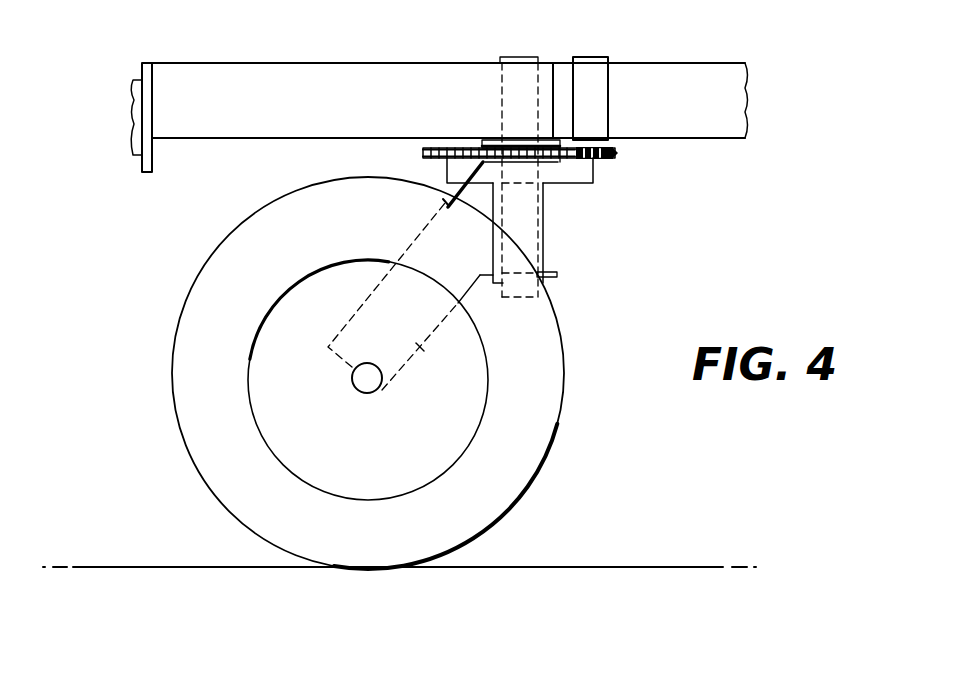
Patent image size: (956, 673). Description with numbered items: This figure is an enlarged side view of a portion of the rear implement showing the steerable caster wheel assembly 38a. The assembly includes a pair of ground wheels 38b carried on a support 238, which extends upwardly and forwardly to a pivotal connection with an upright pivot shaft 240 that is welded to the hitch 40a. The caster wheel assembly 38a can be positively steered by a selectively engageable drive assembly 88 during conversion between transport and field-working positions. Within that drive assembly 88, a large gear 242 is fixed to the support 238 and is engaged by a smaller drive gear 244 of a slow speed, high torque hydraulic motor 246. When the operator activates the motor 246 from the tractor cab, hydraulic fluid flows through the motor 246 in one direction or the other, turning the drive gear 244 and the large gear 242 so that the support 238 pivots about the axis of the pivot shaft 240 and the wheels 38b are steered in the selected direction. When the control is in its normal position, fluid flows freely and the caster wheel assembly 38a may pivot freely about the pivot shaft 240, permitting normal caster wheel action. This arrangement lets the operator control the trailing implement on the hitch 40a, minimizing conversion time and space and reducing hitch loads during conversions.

The hitch 40a is at (360, 56).
The upright pivot shaft 240 is at (515, 57).
The hydraulic motor 246 is at (595, 57).
The drive assembly 88 is at (624, 152).
The drive gear 244 is at (600, 160).
The large gear 242 is at (563, 162).
The steerable caster wheel assembly 38a is at (634, 240).
The support 238 is at (417, 342).
The ground wheels 38b is at (558, 440).